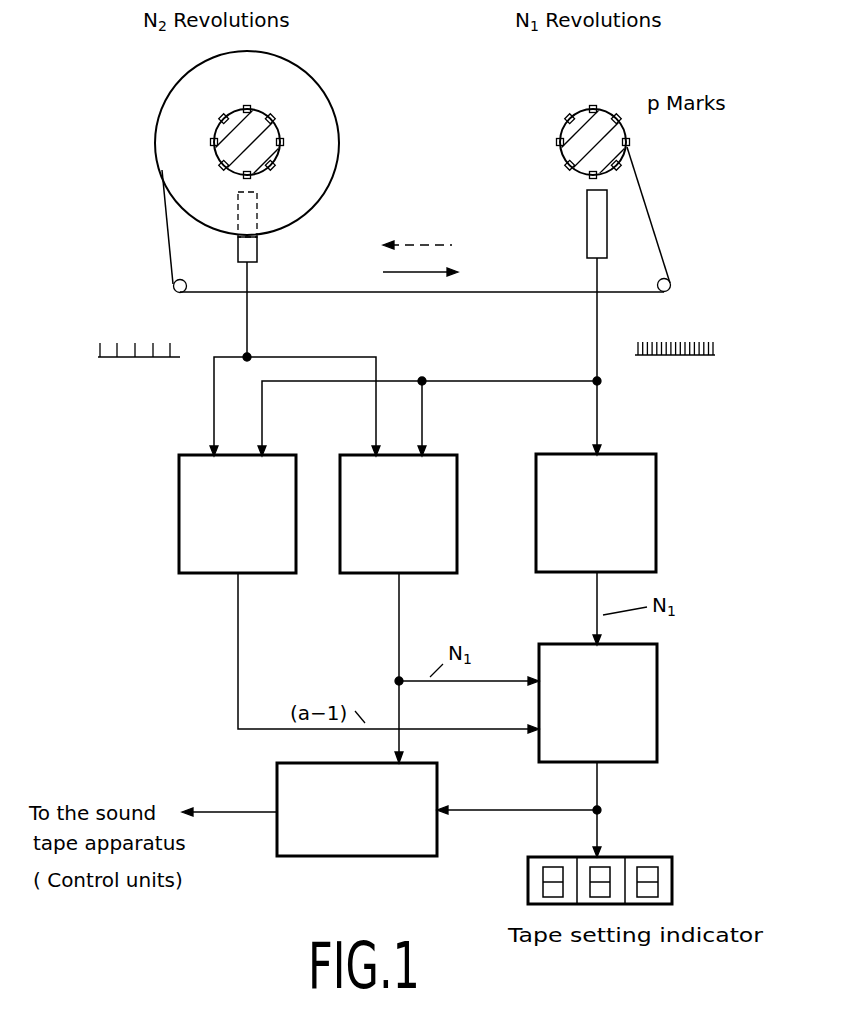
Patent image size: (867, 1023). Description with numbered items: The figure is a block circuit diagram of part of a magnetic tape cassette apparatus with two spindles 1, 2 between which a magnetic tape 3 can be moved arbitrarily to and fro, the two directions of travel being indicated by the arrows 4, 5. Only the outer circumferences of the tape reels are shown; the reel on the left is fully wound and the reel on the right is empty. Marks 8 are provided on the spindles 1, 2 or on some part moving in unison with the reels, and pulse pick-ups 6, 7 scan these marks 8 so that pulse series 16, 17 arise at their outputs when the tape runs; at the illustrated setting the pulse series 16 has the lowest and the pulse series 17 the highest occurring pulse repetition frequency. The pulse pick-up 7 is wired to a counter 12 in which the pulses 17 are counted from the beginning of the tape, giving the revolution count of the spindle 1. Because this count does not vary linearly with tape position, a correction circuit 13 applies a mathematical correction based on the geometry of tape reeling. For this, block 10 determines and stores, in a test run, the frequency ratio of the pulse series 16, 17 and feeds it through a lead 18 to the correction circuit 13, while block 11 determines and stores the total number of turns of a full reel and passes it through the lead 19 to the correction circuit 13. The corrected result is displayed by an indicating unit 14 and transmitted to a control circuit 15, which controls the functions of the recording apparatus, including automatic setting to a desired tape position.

The spindle 1 is at (568, 127).
The spindle 2 is at (230, 163).
The magnetic tape 3 is at (308, 288).
The tape direction arrow 4 is at (431, 273).
The tape direction arrow 5 is at (431, 246).
The pulse pick-up 6 is at (257, 274).
The pulse pick-up 7 is at (606, 285).
The marks 8 is at (277, 170).
The block 10 is at (224, 514).
The block 11 is at (415, 514).
The counter 12 is at (612, 549).
The correction circuit 13 is at (568, 750).
The indicating unit 14 is at (616, 880).
The control circuit 15 is at (309, 828).
The pulse series 16 is at (242, 317).
The pulse series 17 is at (600, 330).
The lead 18 is at (388, 653).
The lead 19 is at (467, 668).